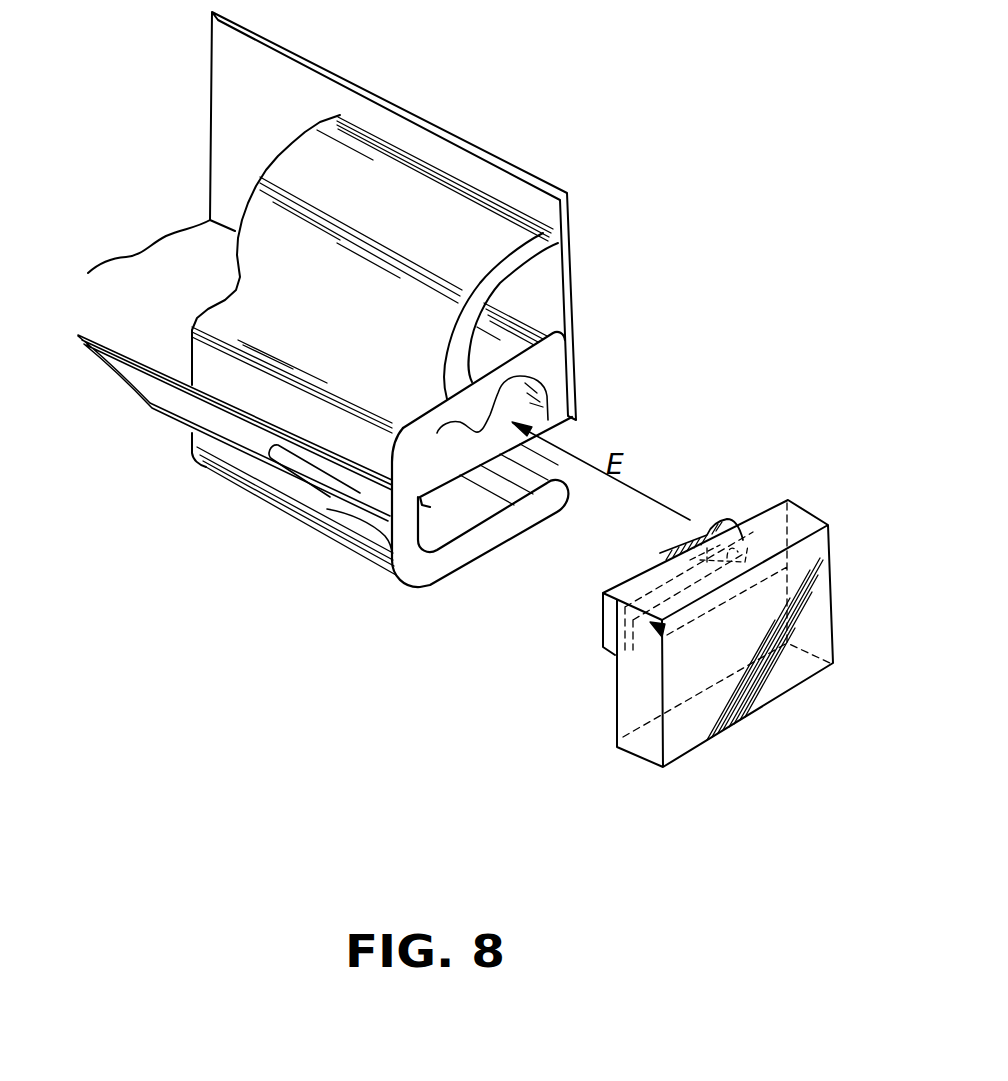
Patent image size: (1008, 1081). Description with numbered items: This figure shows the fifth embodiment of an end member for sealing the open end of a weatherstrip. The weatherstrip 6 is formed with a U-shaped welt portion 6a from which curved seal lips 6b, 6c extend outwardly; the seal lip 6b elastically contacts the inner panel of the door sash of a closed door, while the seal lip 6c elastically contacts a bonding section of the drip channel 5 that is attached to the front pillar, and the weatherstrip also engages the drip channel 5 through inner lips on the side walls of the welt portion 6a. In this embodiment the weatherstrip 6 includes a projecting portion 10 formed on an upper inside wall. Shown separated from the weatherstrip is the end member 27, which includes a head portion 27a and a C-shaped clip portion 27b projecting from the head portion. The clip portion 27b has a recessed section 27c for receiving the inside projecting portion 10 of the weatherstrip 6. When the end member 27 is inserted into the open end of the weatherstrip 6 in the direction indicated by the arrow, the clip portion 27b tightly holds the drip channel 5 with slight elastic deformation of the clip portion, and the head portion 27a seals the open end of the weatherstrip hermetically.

The drip channel 5 is at (433, 152).
The weatherstrip 6 is at (458, 469).
The welt portion 6a is at (450, 420).
The seal lip 6b is at (327, 500).
The seal lip 6c is at (490, 283).
The projecting portion 10 is at (485, 422).
The end member 27 is at (709, 600).
The head portion 27a is at (833, 547).
The clip portion 27b is at (742, 523).
The recessed section 27c is at (702, 562).